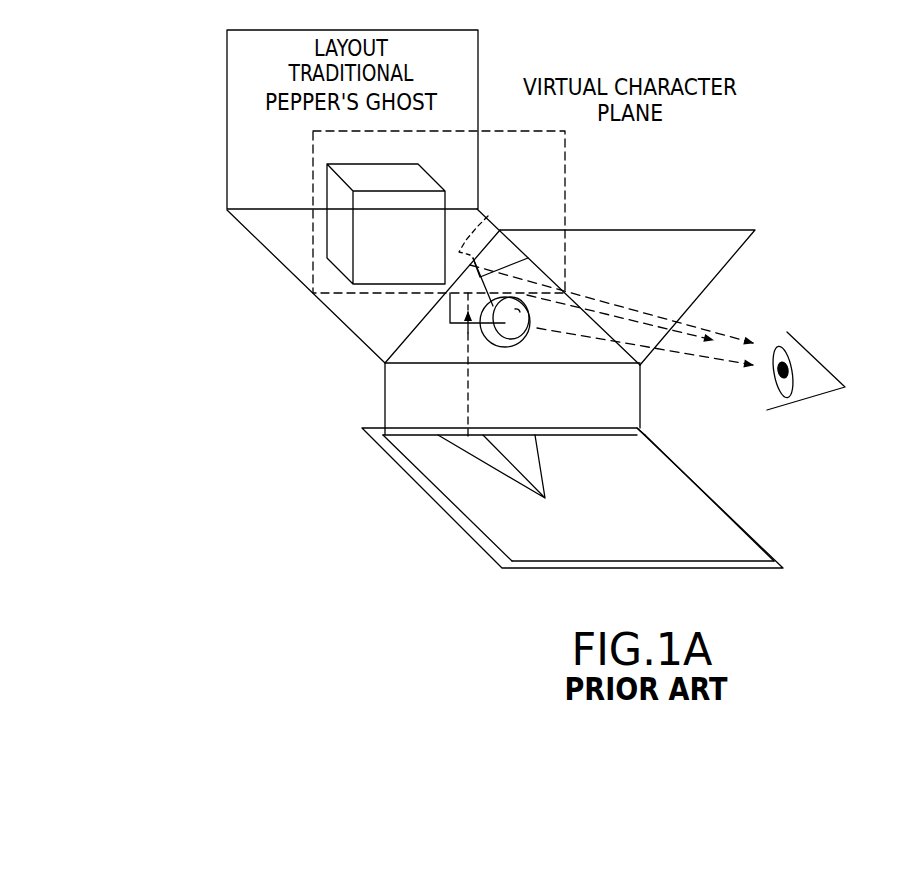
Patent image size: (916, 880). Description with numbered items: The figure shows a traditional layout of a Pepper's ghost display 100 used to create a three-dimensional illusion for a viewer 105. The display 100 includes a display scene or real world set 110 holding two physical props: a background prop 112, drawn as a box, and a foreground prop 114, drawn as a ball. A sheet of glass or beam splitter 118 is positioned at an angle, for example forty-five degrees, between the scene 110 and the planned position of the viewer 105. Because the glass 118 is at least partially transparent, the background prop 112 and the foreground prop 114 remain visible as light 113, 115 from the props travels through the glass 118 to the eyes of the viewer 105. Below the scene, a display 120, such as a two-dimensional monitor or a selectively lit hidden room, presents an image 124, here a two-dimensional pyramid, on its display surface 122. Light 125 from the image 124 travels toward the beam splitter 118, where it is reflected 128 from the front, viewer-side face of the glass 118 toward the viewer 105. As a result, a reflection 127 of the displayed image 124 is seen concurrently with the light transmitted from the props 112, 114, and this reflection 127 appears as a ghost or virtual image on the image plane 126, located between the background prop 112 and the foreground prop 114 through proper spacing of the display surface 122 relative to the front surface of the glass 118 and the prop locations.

The Pepper's ghost display 100 is at (220, 154).
The viewer 105 is at (823, 420).
The display scene 110 is at (262, 252).
The background prop 112 is at (327, 198).
The light 113 is at (486, 218).
The foreground prop 114 is at (530, 337).
The light 115 is at (672, 355).
The glass 118 is at (757, 232).
The display 120 is at (775, 538).
The display surface 122 is at (525, 556).
The image 124 is at (493, 473).
The light 125 is at (470, 391).
The image plane 126 is at (567, 158).
The reflection 127 is at (528, 258).
The reflected light 128 is at (604, 312).